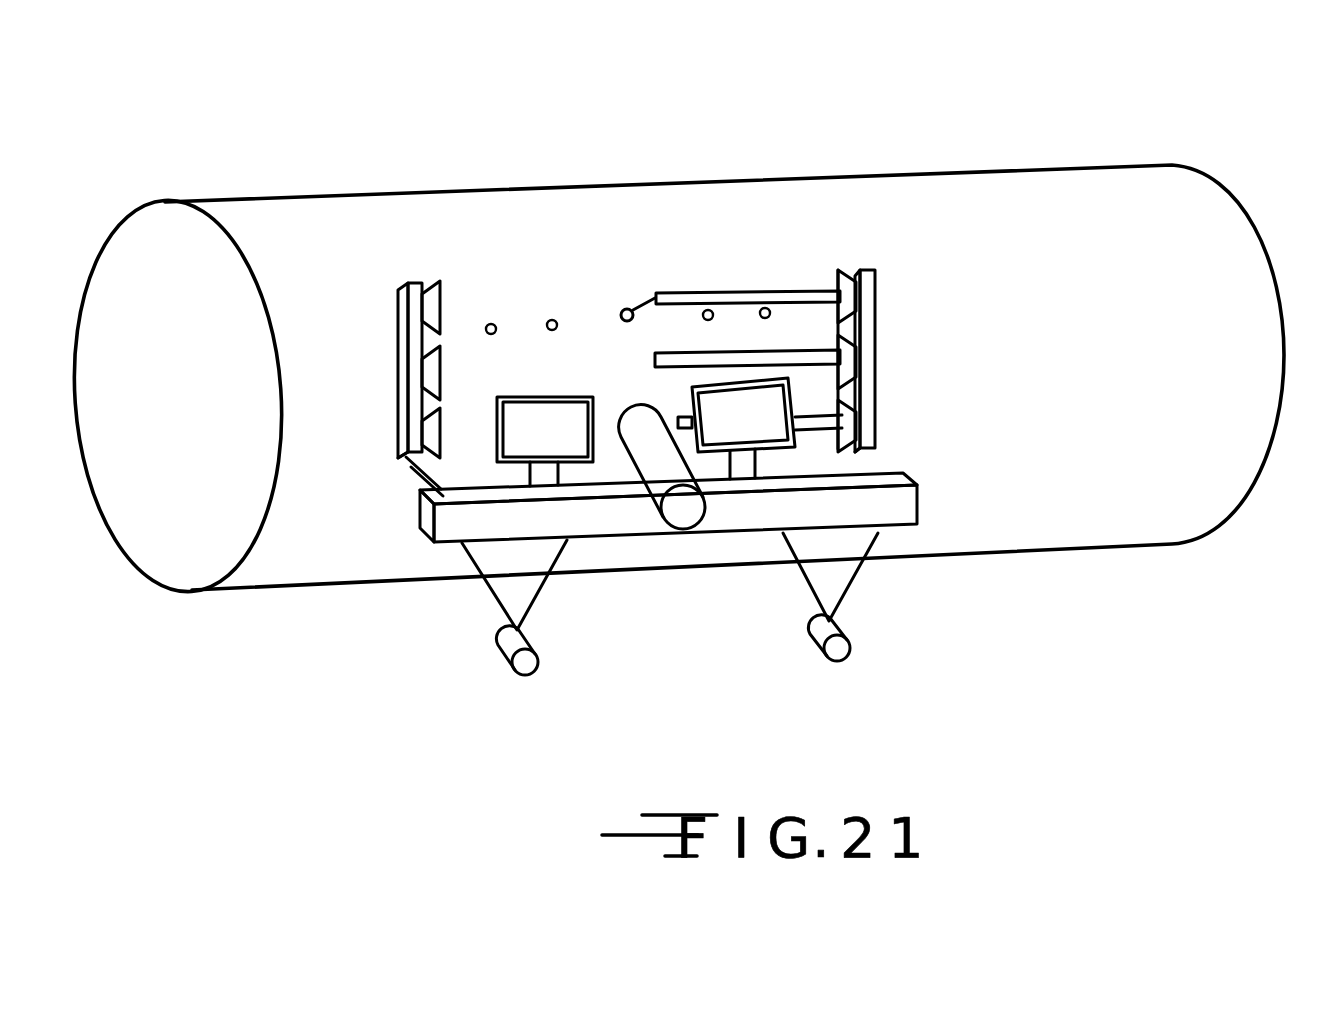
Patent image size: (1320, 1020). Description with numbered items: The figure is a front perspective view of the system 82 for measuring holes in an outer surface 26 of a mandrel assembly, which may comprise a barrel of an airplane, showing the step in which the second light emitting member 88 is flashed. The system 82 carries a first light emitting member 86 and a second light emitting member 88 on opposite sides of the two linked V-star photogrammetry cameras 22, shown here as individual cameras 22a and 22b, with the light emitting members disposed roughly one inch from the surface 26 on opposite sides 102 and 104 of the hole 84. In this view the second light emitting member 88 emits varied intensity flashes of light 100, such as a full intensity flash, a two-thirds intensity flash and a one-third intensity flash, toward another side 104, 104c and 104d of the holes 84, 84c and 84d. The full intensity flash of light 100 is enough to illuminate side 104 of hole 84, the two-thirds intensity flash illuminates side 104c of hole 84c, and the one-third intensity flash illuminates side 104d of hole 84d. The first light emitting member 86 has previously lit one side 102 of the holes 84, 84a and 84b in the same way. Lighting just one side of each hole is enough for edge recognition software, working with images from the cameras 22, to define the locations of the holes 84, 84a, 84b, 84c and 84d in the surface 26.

The outer surface 26 is at (481, 229).
The system 82 is at (592, 620).
The first light emitting member 86 is at (398, 347).
The second light emitting member 88 is at (872, 331).
The flash of light 100 is at (841, 320).
The hole 84 is at (658, 296).
The another side of hole 104 is at (655, 323).
The one side of hole 102 is at (602, 316).
The hole 84a is at (551, 319).
The hole 84b is at (491, 323).
The hole 84c is at (737, 317).
The another side of hole 104c is at (785, 318).
The hole 84d is at (768, 360).
The another side of hole 104d is at (803, 425).
The photogrammetry cameras 22 is at (588, 555).
The photogrammetry camera 22a is at (527, 440).
The photogrammetry camera 22b is at (747, 430).